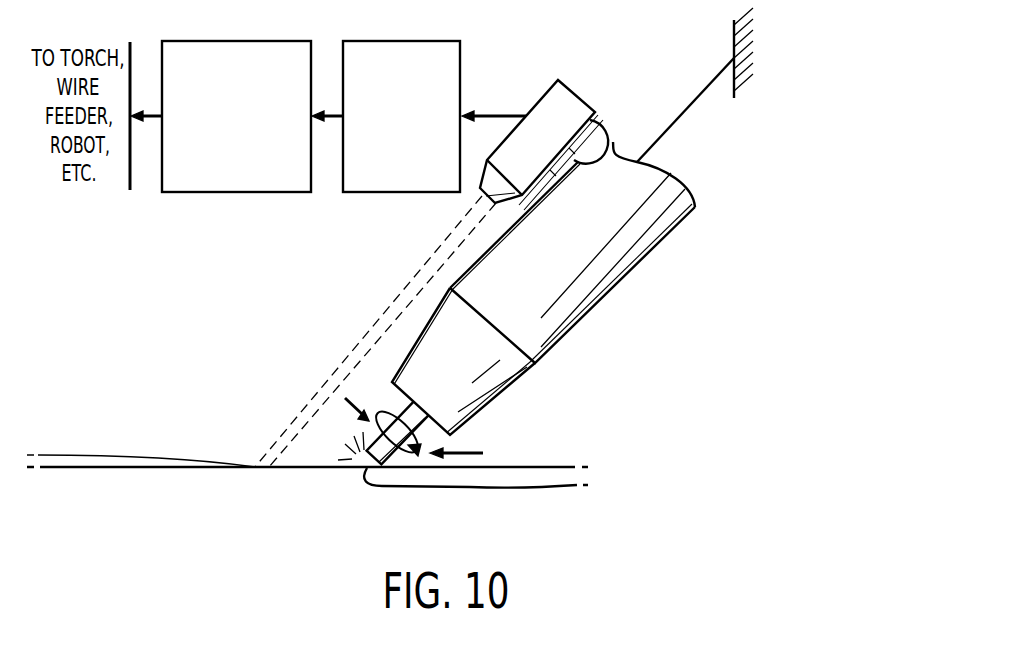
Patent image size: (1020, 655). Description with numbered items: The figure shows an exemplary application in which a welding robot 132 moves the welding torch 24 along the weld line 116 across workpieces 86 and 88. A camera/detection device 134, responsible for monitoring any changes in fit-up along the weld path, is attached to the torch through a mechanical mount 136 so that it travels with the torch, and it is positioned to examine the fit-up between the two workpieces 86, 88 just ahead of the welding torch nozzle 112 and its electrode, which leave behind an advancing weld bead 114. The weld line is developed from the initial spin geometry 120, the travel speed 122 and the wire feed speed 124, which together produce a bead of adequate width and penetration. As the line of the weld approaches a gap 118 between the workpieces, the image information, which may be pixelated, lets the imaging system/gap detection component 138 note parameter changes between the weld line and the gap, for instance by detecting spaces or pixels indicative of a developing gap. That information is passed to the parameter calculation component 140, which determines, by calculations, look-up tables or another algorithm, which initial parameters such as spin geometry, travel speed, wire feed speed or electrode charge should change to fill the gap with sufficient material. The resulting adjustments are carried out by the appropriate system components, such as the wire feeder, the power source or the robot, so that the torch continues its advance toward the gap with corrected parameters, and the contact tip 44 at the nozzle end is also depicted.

The welding torch 24 is at (607, 260).
The contact tip / nozzle 44 is at (399, 421).
The workpiece 86 is at (172, 514).
The workpiece 88 is at (191, 409).
The welding torch nozzle 112 is at (495, 368).
The weld bead 114 is at (520, 470).
The weld line 116 is at (322, 470).
The gap 118 is at (104, 457).
The spin geometry 120 is at (433, 477).
The travel speed 122 is at (457, 447).
The wire feed speed 124 is at (392, 432).
The welding robot 132 is at (830, 89).
The camera/detection device 134 is at (563, 103).
The mechanical mount 136 is at (612, 142).
The imaging system/gap detection component 138 is at (400, 193).
The parameter calculation component 140 is at (235, 193).